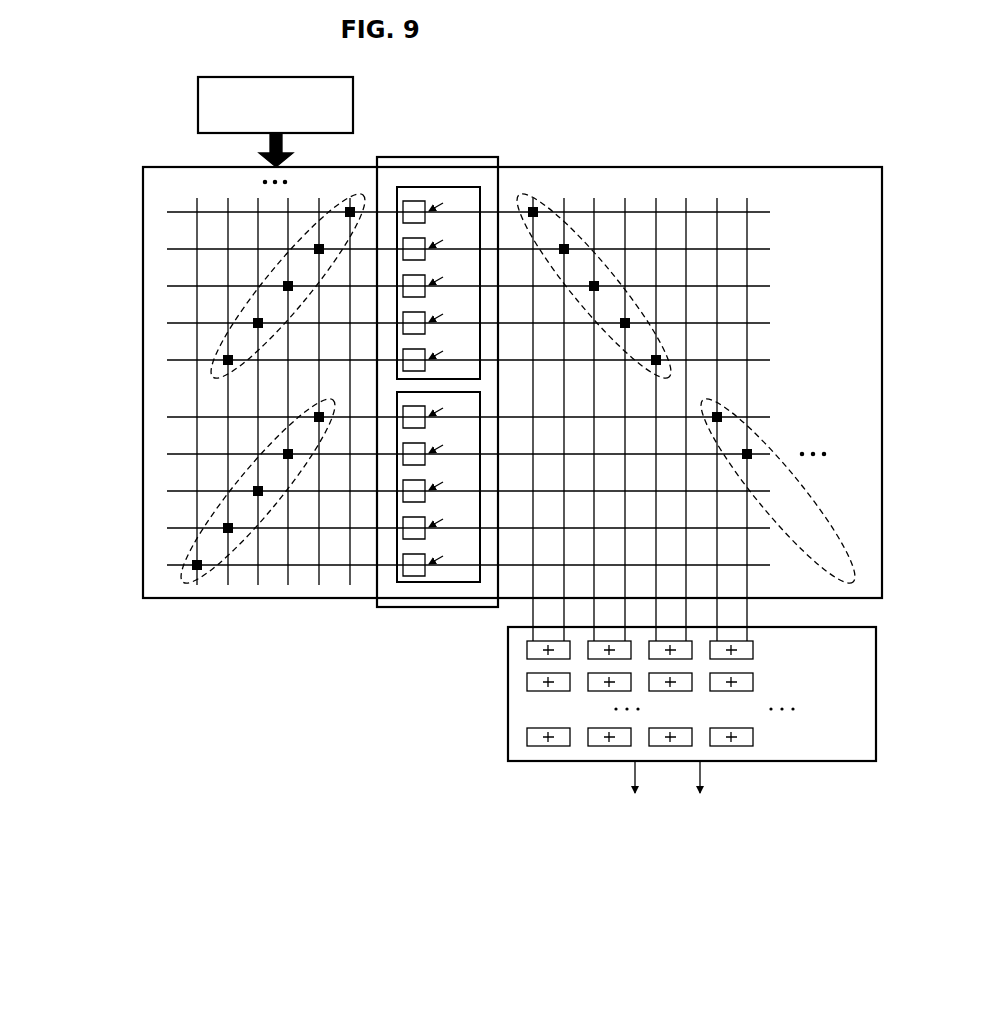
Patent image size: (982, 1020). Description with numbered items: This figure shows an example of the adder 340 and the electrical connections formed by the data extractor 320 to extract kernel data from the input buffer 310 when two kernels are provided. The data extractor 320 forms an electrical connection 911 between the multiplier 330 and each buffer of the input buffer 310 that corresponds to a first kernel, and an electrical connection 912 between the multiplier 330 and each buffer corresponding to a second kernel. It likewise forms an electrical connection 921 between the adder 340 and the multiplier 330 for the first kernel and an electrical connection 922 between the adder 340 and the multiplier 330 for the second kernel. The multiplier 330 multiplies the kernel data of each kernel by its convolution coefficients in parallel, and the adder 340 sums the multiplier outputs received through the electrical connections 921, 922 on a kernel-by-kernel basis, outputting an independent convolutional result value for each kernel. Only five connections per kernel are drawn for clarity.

The input buffer 310 is at (353, 104).
The data extractor 320 is at (803, 167).
The multiplier 330 is at (437, 157).
The adder 340 is at (876, 693).
The electrical connection 911 is at (240, 308).
The electrical connection 912 is at (208, 510).
The electrical connection 921 is at (572, 225).
The electrical connection 922 is at (830, 518).